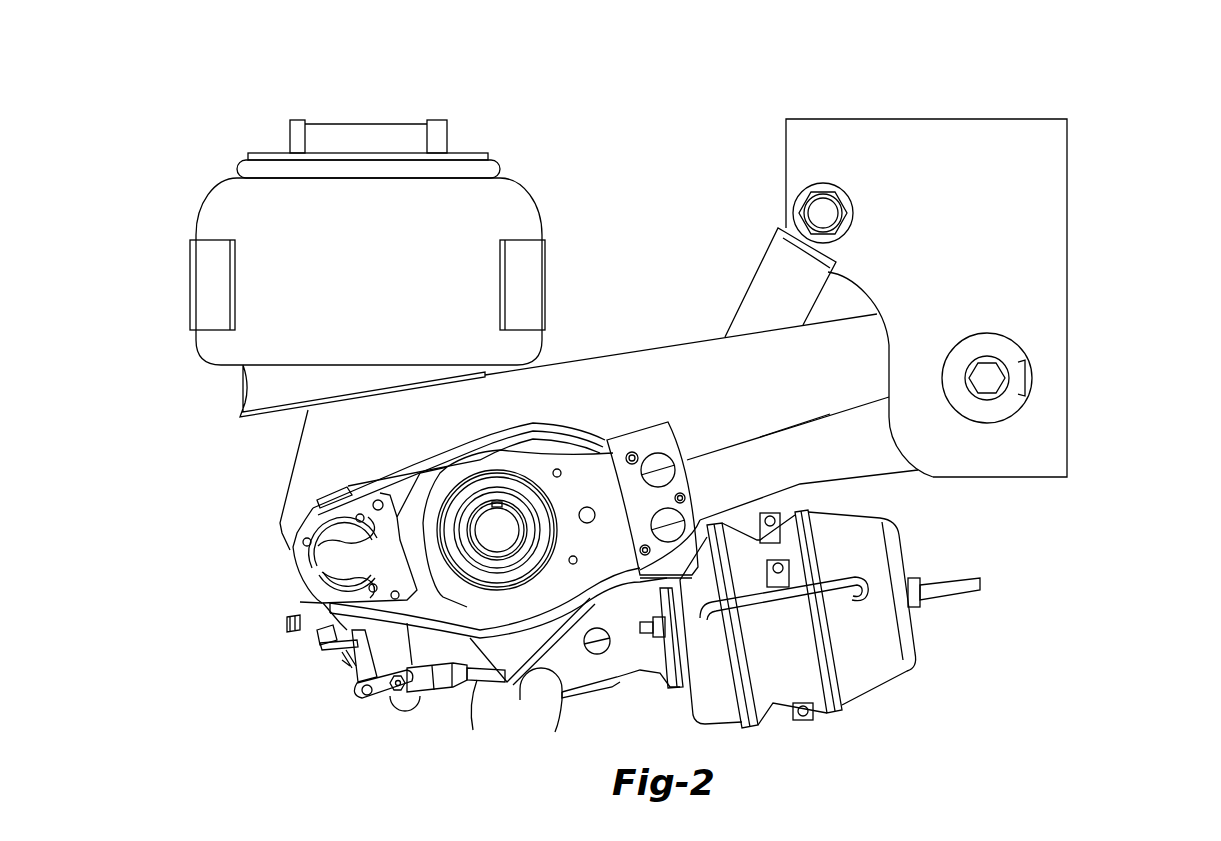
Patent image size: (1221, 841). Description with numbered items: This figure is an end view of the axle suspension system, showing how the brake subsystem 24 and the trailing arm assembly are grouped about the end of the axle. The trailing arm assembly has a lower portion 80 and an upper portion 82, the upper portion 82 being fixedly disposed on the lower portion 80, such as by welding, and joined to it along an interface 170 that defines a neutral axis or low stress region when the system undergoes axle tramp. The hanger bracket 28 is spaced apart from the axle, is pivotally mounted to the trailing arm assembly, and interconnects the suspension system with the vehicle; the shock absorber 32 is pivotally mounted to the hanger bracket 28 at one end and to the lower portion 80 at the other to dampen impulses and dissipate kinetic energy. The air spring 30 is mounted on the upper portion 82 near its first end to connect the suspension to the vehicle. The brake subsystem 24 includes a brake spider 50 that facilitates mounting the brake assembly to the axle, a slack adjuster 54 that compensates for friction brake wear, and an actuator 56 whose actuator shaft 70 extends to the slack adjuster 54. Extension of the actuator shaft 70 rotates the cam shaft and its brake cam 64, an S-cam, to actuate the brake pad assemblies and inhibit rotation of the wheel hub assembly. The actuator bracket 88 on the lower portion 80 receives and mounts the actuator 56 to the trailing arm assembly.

The brake subsystem 24 is at (400, 740).
The hanger bracket 28 is at (1090, 95).
The air spring 30 is at (362, 268).
The shock absorber 32 is at (772, 298).
The brake spider 50 is at (598, 447).
The slack adjuster 54 is at (390, 655).
The actuator 56 is at (897, 670).
The brake cam 64 is at (287, 556).
The actuator shaft 70 is at (478, 684).
The lower portion 80 is at (790, 472).
The upper portion 82 is at (714, 395).
The actuator bracket 88 is at (567, 700).
The interface 170 is at (793, 428).